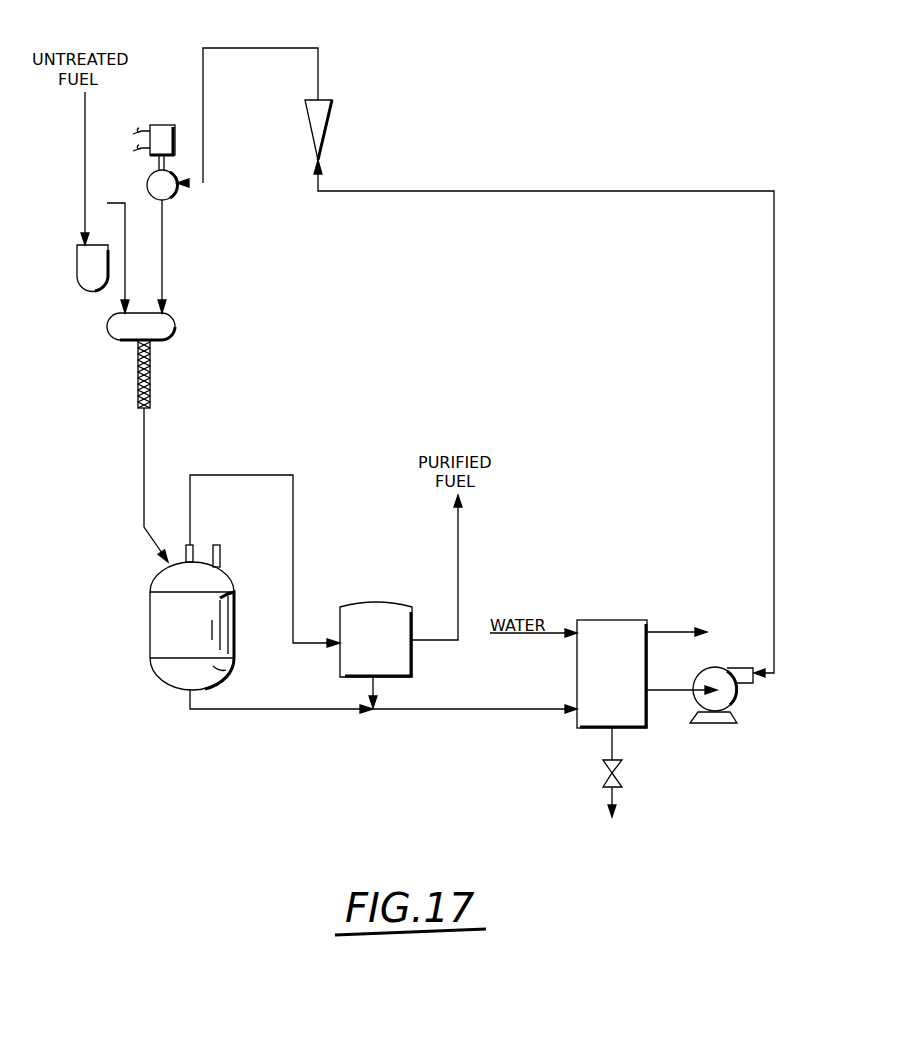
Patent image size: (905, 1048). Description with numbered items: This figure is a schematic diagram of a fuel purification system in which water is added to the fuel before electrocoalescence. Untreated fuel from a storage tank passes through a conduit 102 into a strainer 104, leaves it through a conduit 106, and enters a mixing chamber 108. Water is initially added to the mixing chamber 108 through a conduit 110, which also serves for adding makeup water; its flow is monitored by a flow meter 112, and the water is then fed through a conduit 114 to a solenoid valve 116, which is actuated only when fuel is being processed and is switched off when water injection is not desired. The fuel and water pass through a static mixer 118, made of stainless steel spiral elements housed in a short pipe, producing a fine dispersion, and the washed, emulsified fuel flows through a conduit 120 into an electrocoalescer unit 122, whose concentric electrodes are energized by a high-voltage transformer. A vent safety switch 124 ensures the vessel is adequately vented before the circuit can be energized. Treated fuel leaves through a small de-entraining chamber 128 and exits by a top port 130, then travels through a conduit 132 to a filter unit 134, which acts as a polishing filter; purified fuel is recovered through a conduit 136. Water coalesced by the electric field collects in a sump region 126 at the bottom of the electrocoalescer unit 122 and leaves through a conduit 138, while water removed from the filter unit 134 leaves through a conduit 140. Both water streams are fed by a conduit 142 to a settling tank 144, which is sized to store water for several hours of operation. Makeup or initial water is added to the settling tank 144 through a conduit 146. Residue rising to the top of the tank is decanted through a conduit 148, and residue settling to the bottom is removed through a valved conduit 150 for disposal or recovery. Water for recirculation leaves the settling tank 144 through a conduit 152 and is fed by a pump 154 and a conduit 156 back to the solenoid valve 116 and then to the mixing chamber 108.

The conduit 102 is at (83, 128).
The strainer 104 is at (77, 265).
The conduit 106 is at (113, 202).
The mixing chamber 108 is at (175, 326).
The conduit 110 is at (163, 232).
The flow meter 112 is at (328, 122).
The conduit 114 is at (205, 48).
The solenoid valve 116 is at (158, 125).
The static mixer 118 is at (150, 388).
The conduit 120 is at (142, 443).
The electrocoalescer unit 122 is at (193, 619).
The vent safety switch 124 is at (222, 550).
The sump region 126 is at (233, 675).
The de-entraining chamber 128 is at (225, 572).
The top port 130 is at (194, 550).
The conduit 132 is at (237, 475).
The filter unit 134 is at (362, 604).
The conduit 136 is at (460, 557).
The conduit 138 is at (190, 706).
The conduit 140 is at (378, 689).
The conduit 142 is at (507, 712).
The settling tank 144 is at (607, 620).
The conduit 146 is at (535, 635).
The conduit 148 is at (672, 631).
The valved conduit 150 is at (622, 774).
The conduit 152 is at (680, 695).
The pump 154 is at (727, 724).
The conduit 156 is at (775, 521).